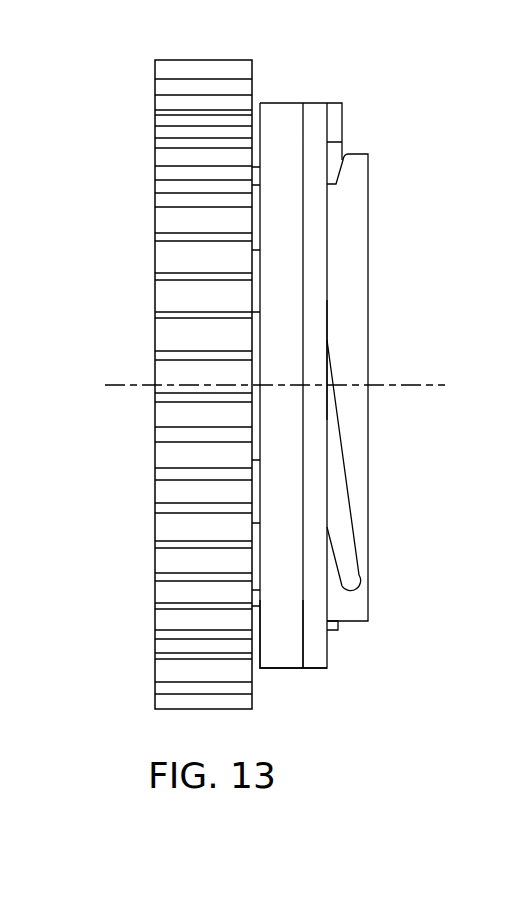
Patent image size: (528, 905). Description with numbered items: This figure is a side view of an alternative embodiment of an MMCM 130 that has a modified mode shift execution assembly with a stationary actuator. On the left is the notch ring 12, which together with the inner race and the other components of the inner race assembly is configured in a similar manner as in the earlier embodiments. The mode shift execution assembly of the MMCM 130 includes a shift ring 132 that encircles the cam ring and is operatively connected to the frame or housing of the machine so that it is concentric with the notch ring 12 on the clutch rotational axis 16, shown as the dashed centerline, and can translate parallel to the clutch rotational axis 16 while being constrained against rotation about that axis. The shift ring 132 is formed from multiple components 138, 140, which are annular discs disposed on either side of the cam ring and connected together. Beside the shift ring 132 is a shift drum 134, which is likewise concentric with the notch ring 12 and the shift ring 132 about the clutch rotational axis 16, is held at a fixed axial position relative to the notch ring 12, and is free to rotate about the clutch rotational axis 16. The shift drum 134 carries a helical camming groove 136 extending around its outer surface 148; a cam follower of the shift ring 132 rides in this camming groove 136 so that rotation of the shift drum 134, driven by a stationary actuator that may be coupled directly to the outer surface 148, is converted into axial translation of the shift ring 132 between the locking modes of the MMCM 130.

The notch ring 12 is at (170, 101).
The clutch rotational axis 16 is at (140, 386).
The MMCM 130 is at (113, 329).
The shift ring 132 is at (273, 112).
The shift drum 134 is at (351, 357).
The helical camming groove 136 is at (343, 560).
The component of the shift ring 138 is at (286, 669).
The component of the shift ring 140 is at (317, 669).
The outer surface 148 is at (358, 218).